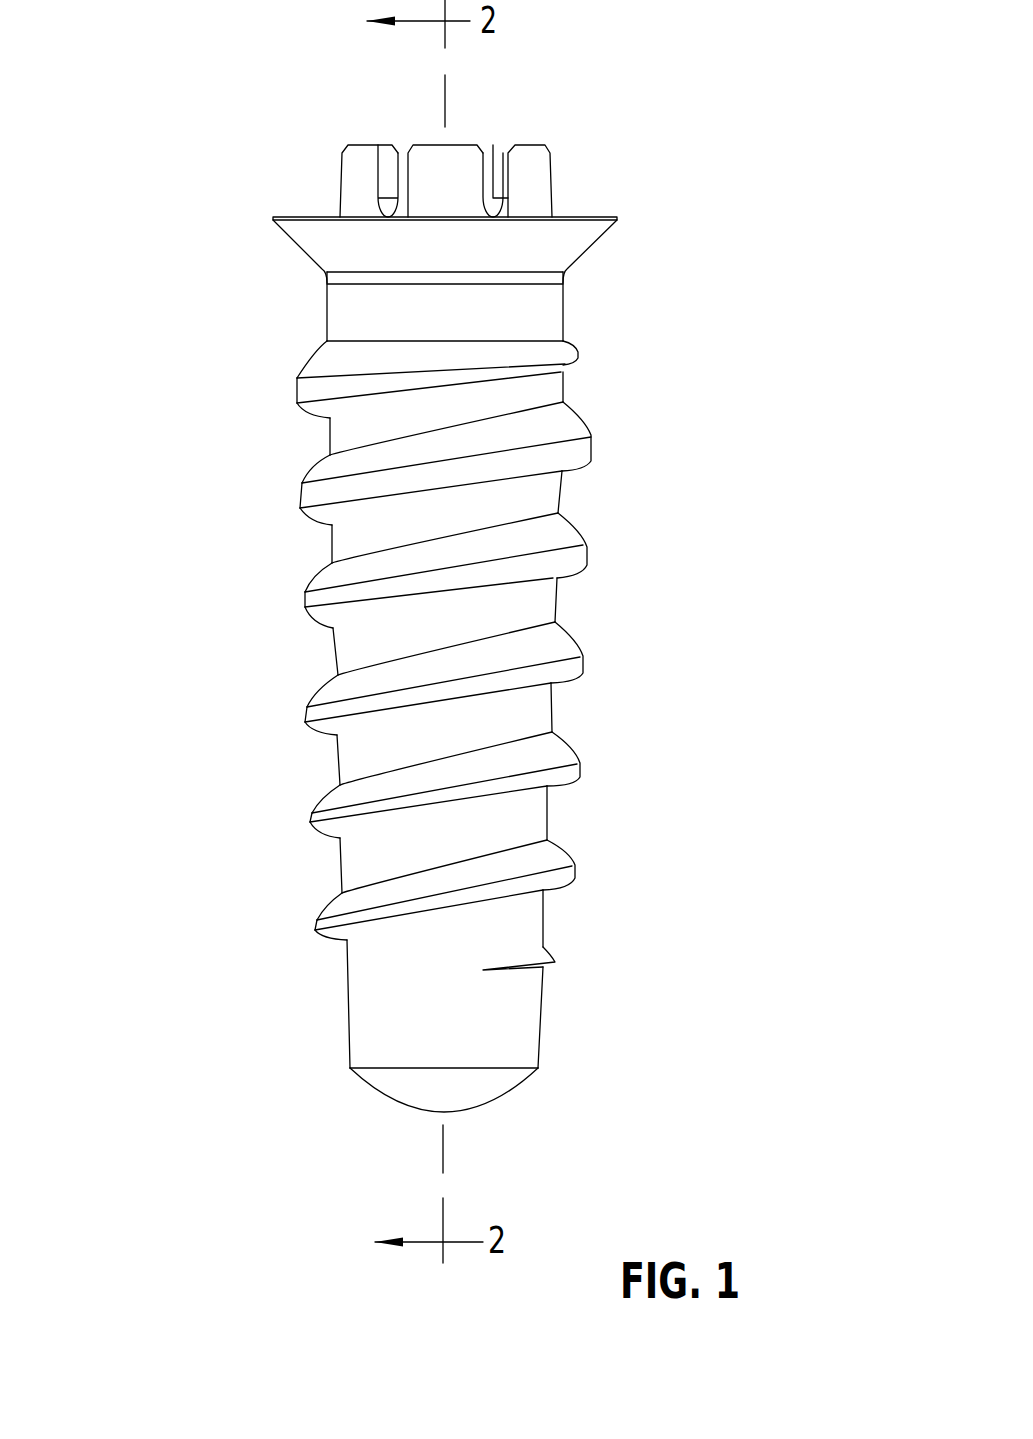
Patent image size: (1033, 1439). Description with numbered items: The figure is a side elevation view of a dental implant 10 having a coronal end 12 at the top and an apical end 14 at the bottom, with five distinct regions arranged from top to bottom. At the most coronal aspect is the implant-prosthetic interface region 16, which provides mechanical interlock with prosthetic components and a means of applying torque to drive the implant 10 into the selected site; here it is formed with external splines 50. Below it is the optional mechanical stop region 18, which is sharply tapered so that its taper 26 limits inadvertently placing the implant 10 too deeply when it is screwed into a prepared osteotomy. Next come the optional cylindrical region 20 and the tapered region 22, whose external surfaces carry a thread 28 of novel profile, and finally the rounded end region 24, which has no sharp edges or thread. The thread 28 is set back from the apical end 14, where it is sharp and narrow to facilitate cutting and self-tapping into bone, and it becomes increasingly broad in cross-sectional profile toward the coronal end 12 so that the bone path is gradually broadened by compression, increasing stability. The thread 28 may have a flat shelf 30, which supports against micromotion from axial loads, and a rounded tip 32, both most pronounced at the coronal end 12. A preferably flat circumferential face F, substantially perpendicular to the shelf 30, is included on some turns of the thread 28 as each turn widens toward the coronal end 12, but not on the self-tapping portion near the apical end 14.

The implant 10 is at (790, 162).
The coronal end 12 is at (618, 170).
The apical end 14 is at (567, 1108).
The implant-prosthetic interface region 16 is at (338, 182).
The mechanical stop region 18 is at (290, 237).
The cylindrical region 20 is at (325, 303).
The tapered region 22 is at (550, 818).
The rounded end region 24 is at (377, 1092).
The taper 26 is at (541, 242).
The thread 28 is at (583, 656).
The flat shelf 30 is at (308, 410).
The rounded tip 32 is at (338, 363).
The external splines 50 is at (377, 145).
The circumferential face F is at (593, 443).